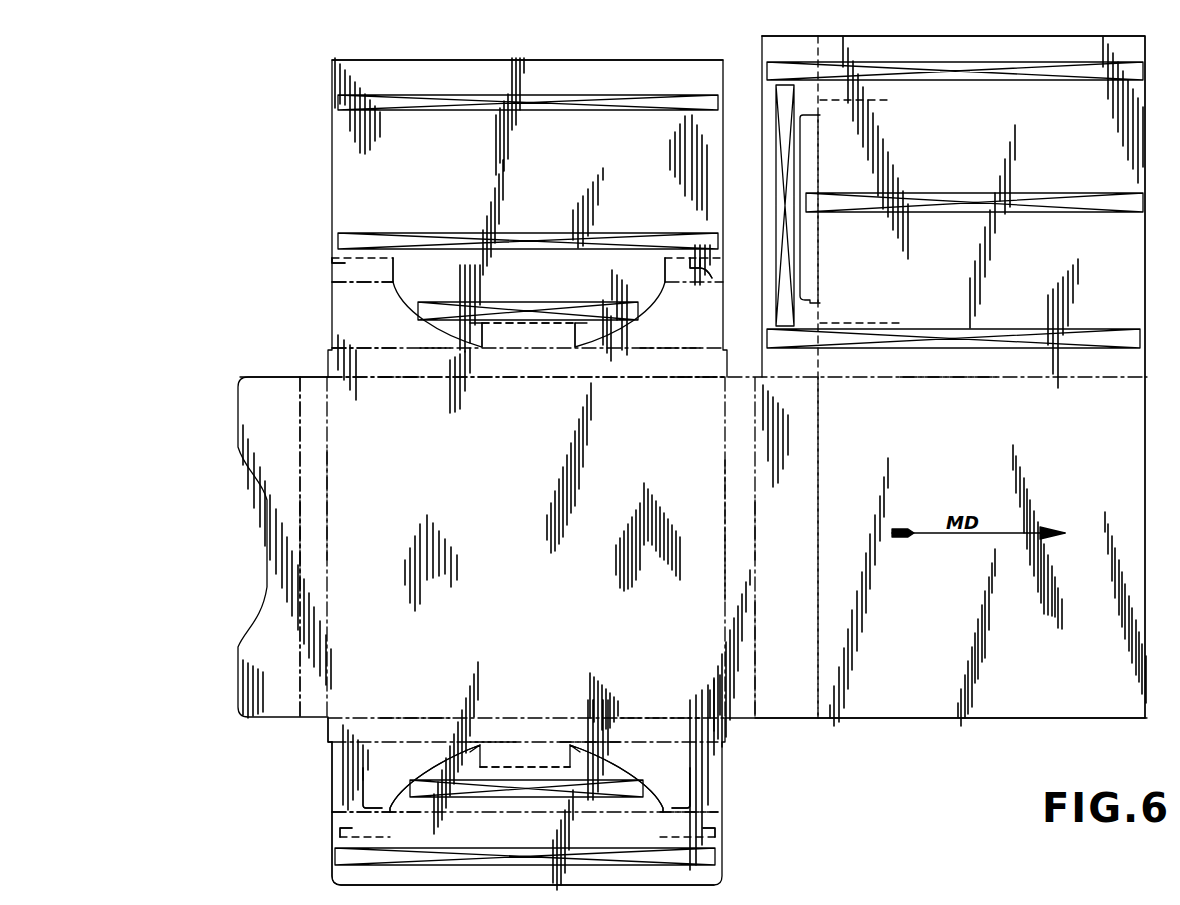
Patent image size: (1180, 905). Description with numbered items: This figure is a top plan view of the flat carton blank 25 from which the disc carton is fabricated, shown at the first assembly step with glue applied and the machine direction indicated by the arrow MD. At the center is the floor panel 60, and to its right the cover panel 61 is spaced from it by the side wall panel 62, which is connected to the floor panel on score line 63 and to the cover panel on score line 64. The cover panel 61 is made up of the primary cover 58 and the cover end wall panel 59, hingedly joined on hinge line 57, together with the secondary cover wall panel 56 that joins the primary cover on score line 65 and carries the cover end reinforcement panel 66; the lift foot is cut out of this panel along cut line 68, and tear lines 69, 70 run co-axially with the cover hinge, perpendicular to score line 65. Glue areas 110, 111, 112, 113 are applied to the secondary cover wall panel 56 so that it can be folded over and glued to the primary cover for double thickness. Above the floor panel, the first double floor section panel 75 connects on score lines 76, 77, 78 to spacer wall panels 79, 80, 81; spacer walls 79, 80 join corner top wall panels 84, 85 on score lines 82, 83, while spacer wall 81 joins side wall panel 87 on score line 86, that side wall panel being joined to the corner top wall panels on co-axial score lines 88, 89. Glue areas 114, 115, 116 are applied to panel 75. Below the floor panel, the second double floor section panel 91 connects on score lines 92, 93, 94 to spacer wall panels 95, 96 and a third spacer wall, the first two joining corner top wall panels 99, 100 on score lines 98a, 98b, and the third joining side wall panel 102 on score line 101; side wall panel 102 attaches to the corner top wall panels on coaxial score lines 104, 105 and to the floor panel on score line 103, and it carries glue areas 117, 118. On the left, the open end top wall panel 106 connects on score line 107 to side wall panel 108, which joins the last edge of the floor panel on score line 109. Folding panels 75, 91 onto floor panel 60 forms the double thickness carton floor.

The carton blank 25 is at (185, 337).
The secondary cover wall panel 56 is at (1069, 160).
The hinge line 57 is at (818, 654).
The primary cover 58 is at (1031, 633).
The cover end wall panel 59 is at (788, 637).
The floor panel 60 is at (544, 581).
The cover panel 61 is at (1083, 487).
The side wall panel 62 is at (742, 548).
The score line 63 is at (725, 502).
The score line 64 is at (756, 547).
The score line 65 is at (963, 380).
The cover end reinforcement panel 66 is at (818, 322).
The cut line 68 is at (803, 258).
The tear line 69 is at (869, 99).
The tear line 70 is at (873, 313).
The first double floor section panel 75 is at (375, 180).
The score line 76 is at (332, 262).
The score line 77 is at (700, 268).
The score line 78 is at (510, 323).
The spacer wall panel 79 is at (350, 285).
The spacer wall panel 80 is at (714, 278).
The spacer wall panel 81 is at (536, 340).
The score line 82 is at (365, 283).
The score line 83 is at (668, 290).
The corner top wall panel 84 is at (370, 340).
The corner top wall panel 85 is at (665, 342).
The score line 86 is at (556, 350).
The side wall panel 87 is at (432, 368).
The score line 88 is at (400, 352).
The score line 89 is at (695, 352).
The second double floor section panel 91 is at (328, 814).
The score line 92 is at (345, 832).
The score line 93 is at (700, 837).
The score line 94 is at (527, 767).
The spacer wall panel 95 is at (385, 826).
The spacer wall panel 96 is at (705, 821).
The score line 98a is at (352, 797).
The score line 98b is at (693, 803).
The corner top wall panel 99 is at (401, 772).
The corner top wall panel 100 is at (674, 776).
The score line 101 is at (506, 716).
The side wall panel 102 is at (362, 732).
The score line 103 is at (578, 716).
The score line 104 is at (415, 716).
The score line 105 is at (656, 716).
The open end top wall panel 106 is at (265, 490).
The score line 107 is at (298, 532).
The side wall panel 108 is at (322, 555).
The score line 109 is at (330, 505).
The glue area 110 is at (1012, 75).
The glue area 111 is at (972, 192).
The glue area 112 is at (975, 329).
The glue area 113 is at (785, 170).
The glue area 114 is at (586, 90).
The glue area 115 is at (512, 230).
The glue area 116 is at (558, 302).
The glue area 117 is at (540, 860).
The glue area 118 is at (505, 798).